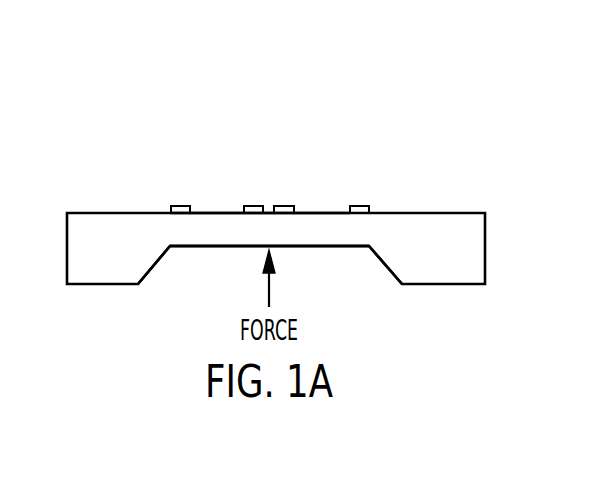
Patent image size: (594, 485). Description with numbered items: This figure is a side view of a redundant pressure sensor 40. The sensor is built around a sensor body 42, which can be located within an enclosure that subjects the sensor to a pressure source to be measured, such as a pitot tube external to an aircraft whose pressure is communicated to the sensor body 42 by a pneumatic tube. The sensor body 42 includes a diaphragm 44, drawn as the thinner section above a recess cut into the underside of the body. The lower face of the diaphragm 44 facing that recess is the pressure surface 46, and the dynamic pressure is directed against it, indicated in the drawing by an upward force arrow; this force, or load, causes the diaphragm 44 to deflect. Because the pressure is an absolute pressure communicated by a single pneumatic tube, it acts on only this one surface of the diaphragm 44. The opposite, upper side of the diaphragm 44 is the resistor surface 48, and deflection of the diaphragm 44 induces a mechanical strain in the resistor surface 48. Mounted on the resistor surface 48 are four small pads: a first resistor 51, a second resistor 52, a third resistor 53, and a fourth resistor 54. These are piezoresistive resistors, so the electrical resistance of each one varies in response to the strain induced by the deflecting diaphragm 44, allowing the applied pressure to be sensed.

The redundant pressure sensor 40 is at (110, 120).
The sensor body 42 is at (483, 212).
The diaphragm 44 is at (332, 235).
The pressure surface 46 is at (213, 246).
The resistor surface 48 is at (210, 212).
The first resistor 51 is at (183, 206).
The second resistor 52 is at (254, 206).
The third resistor 53 is at (284, 206).
The fourth resistor 54 is at (360, 206).